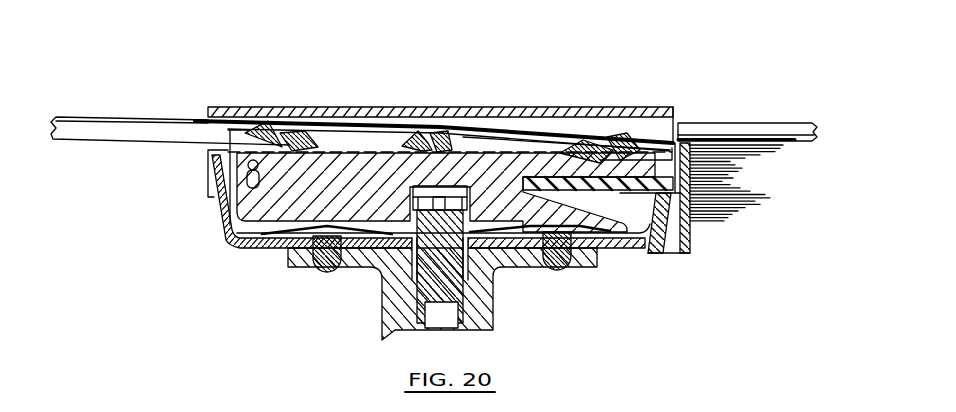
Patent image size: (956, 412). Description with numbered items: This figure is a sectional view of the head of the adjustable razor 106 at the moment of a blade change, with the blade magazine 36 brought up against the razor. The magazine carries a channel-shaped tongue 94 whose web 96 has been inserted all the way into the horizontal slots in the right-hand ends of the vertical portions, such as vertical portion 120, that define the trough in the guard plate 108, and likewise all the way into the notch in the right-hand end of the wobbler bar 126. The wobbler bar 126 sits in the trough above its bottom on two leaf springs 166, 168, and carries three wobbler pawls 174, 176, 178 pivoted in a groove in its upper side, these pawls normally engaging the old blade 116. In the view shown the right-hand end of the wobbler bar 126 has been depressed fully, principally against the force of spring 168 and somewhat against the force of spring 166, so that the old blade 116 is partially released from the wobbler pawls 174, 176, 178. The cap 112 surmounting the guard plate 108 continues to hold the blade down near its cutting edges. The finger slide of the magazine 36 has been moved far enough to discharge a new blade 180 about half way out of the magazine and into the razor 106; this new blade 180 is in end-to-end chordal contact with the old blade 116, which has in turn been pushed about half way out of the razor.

The blade magazine 36 is at (758, 112).
The tongue 94 is at (667, 236).
The web 96 is at (605, 192).
The razor 106 is at (604, 313).
The guard plate 108 is at (655, 258).
The cap 112 is at (450, 99).
The blade 116 is at (363, 124).
The vertical portion 120 is at (637, 234).
The wobbler bar 126 is at (250, 207).
The leaf spring 166 is at (346, 237).
The leaf spring 168 is at (540, 237).
The wobbler pawl 174 is at (281, 146).
The wobbler pawl 176 is at (471, 128).
The wobbler pawl 178 is at (617, 136).
The new blade 180 is at (538, 129).